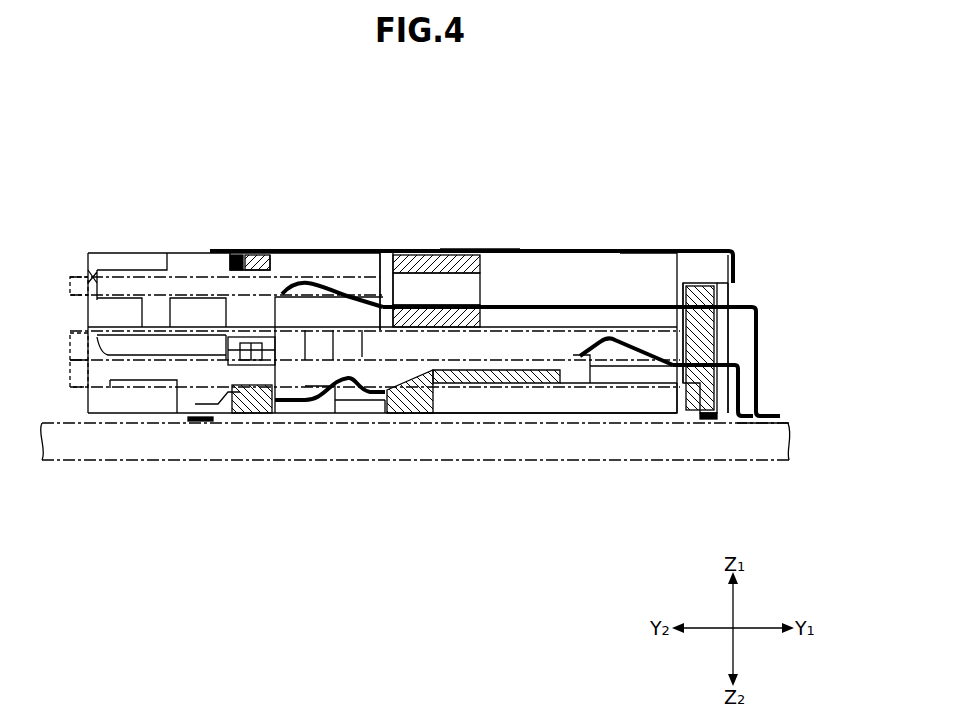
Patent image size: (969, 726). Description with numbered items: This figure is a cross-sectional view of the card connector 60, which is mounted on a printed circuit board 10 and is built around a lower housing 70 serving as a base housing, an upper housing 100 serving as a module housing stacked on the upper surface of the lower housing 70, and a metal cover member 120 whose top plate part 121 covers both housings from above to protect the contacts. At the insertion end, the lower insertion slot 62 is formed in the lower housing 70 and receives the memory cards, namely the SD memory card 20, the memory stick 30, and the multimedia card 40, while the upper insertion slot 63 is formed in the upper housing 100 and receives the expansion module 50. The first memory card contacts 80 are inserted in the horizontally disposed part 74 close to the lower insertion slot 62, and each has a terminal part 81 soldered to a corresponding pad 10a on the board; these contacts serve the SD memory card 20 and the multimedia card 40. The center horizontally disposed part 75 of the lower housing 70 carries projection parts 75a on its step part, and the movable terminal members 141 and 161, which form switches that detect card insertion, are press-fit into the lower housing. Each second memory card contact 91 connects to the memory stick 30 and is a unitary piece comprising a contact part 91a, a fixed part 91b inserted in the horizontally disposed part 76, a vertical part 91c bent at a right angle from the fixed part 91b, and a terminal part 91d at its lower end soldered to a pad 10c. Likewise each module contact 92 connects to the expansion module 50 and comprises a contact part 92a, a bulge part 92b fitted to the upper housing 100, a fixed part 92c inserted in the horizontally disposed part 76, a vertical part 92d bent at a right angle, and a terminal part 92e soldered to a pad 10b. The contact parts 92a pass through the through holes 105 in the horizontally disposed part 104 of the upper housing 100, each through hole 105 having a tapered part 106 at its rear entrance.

The printed circuit board 10 is at (720, 470).
The pad 10a is at (198, 422).
The pad 10b is at (773, 425).
The pad 10c is at (745, 428).
The SD memory card 20 is at (70, 378).
The memory stick 30 is at (70, 338).
The multimedia card 40 is at (120, 406).
The expansion module 50 is at (72, 285).
The card connector 60 is at (725, 125).
The lower insertion slot 62 is at (100, 377).
The upper insertion slot 63 is at (92, 283).
The lower housing 70 is at (585, 424).
The horizontally disposed part 74 is at (248, 401).
The center horizontally disposed part 75 is at (500, 384).
The projection part 75a is at (316, 400).
The horizontally disposed part 76 is at (705, 337).
The first memory card contact 80 is at (356, 394).
The terminal part 81 is at (195, 404).
The second memory card contact 91 is at (635, 370).
The contact part 91a is at (606, 337).
The fixed part 91b is at (723, 350).
The vertical part 91c is at (742, 398).
The terminal part 91d is at (752, 408).
The module contact 92 is at (563, 249).
The contact part 92a is at (310, 282).
The bulge part 92b is at (472, 249).
The fixed part 92c is at (721, 277).
The vertical part 92d is at (735, 373).
The terminal part 92e is at (765, 417).
The upper housing 100 is at (161, 240).
The horizontally disposed part 104 is at (407, 256).
The through hole 105 is at (445, 256).
The tapered part 106 is at (518, 256).
The cover member 120 is at (647, 240).
The top plate part 121 is at (698, 283).
The movable terminal member 141 is at (402, 393).
The movable terminal member 161 is at (246, 358).